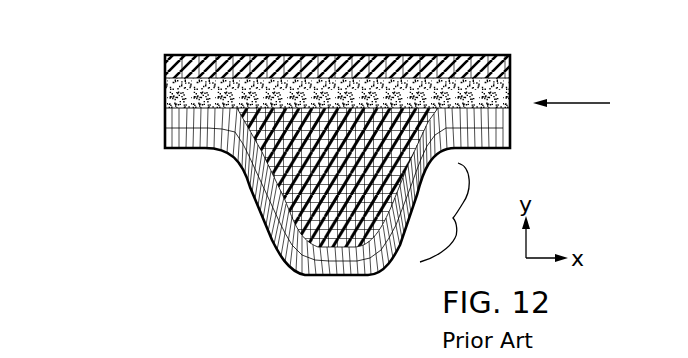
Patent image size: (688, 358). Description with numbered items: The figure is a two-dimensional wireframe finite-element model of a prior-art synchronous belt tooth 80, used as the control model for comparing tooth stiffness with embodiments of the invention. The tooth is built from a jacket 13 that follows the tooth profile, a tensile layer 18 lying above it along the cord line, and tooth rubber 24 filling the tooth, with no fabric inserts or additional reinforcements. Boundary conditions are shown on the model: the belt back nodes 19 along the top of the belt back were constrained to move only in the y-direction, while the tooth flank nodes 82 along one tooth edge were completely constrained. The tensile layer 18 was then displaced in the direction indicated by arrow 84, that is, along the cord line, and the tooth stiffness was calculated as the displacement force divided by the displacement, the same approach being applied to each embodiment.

The synchronous belt tooth 80 is at (276, 170).
The belt back nodes 19 is at (350, 66).
The tensile layer 18 is at (167, 93).
The jacket 13 is at (304, 263).
The tooth rubber 24 is at (306, 192).
The tooth flank nodes 82 is at (454, 212).
The arrow 84 is at (585, 103).